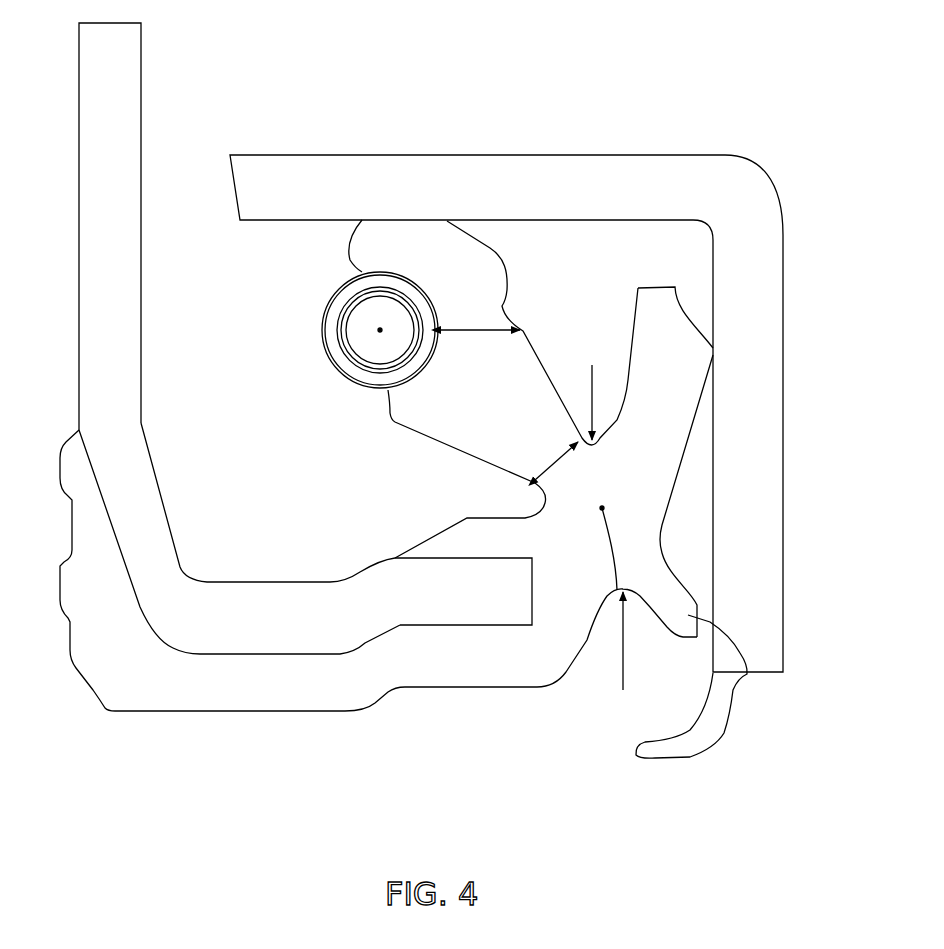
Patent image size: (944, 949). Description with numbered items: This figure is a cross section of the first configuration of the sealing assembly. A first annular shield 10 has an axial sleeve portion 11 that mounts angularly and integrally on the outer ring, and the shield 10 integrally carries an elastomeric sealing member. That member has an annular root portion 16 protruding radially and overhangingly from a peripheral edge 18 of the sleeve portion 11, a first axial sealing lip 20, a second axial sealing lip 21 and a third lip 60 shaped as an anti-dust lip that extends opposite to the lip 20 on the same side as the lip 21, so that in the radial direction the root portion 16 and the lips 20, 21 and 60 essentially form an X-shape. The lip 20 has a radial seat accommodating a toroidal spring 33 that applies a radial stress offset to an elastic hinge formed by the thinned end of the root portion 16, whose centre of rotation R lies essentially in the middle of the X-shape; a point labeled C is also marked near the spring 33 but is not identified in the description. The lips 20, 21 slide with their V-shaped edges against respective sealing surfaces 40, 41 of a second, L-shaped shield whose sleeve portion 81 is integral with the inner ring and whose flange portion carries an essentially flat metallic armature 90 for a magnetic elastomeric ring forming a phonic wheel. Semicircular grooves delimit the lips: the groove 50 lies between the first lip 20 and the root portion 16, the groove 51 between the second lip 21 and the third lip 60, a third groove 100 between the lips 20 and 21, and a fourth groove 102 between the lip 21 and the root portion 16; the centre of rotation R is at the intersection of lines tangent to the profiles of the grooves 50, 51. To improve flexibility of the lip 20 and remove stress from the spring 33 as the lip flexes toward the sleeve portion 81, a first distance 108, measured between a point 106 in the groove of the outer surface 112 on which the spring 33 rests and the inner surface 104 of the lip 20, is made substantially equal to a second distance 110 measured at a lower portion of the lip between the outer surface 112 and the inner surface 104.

The first annular shield 10 is at (223, 714).
The axial sleeve portion 11 is at (110, 360).
The annular root portion 16 is at (553, 603).
The peripheral edge 18 is at (502, 597).
The first axial sealing annular lip 20 is at (443, 267).
The second axial sealing lip 21 is at (655, 465).
The toroidal spring 33 is at (333, 333).
The sealing surface 40 is at (298, 224).
The sealing surface 41 is at (711, 273).
The annular groove 50 is at (542, 498).
The groove 51 is at (664, 540).
The third lip 60 is at (747, 675).
The sleeve portion 81 is at (760, 412).
The armature 90 is at (407, 181).
The third groove 100 is at (592, 386).
The fourth groove 102 is at (624, 652).
The inner surface 104 is at (533, 343).
The point 106 is at (447, 340).
The first distance 108 is at (488, 332).
The second distance 110 is at (557, 462).
The outer surface 112 is at (507, 473).
The spring center C is at (380, 330).
The centre of rotation R is at (617, 590).